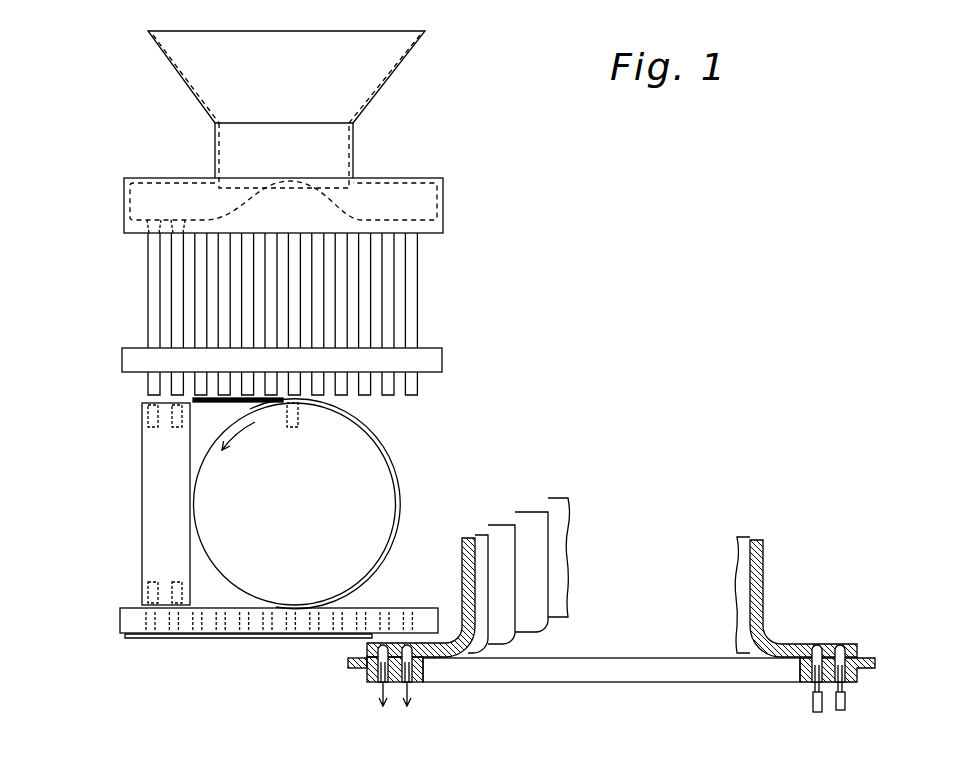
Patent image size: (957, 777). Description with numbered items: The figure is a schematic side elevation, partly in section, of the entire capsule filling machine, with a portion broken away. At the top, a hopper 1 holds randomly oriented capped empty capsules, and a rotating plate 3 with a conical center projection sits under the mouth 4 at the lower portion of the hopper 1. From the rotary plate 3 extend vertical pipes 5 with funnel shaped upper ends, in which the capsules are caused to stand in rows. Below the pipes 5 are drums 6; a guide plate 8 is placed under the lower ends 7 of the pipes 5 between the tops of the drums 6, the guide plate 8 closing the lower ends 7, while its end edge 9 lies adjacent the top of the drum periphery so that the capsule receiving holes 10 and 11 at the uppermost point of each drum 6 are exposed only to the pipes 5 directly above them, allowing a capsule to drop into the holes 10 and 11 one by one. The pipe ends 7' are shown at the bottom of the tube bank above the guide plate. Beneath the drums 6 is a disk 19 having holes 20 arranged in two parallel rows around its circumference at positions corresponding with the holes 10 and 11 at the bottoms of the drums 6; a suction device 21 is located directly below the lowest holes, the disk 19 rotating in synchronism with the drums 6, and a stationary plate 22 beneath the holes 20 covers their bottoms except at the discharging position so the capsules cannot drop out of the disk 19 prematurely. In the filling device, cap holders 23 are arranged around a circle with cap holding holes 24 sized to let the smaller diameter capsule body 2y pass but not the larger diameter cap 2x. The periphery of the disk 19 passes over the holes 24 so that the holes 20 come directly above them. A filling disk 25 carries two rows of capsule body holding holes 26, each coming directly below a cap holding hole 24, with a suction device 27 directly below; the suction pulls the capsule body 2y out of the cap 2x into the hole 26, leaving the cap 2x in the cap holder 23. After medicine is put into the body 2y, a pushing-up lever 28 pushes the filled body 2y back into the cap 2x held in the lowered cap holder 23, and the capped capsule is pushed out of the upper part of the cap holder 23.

The hopper 1 is at (367, 82).
The rotating plate 3 is at (352, 213).
The mouth 4 is at (345, 188).
The pipes 5 is at (148, 285).
The lower ends of the pipes 7 is at (267, 380).
The tube outlet ends 7' is at (253, 376).
The guide plate 8 is at (217, 402).
The end edge of the guide plate 9 is at (228, 423).
The capsule receiving hole 10 is at (148, 417).
The capsule receiving hole 11 is at (172, 425).
The drum 6 is at (142, 522).
The disk 19 is at (258, 627).
The holes 20 is at (177, 623).
The suction device 21 is at (292, 637).
The stationary plate 22 is at (210, 637).
The cap holder 23 is at (482, 537).
The cap holding hole 24 is at (367, 647).
The filling disk 25 is at (567, 673).
The capsule body holding hole 26 is at (417, 680).
The suction device 27 is at (383, 688).
The pushing-up lever 28 is at (813, 698).
The cap 2x is at (383, 645).
The capsule body 2y is at (367, 676).